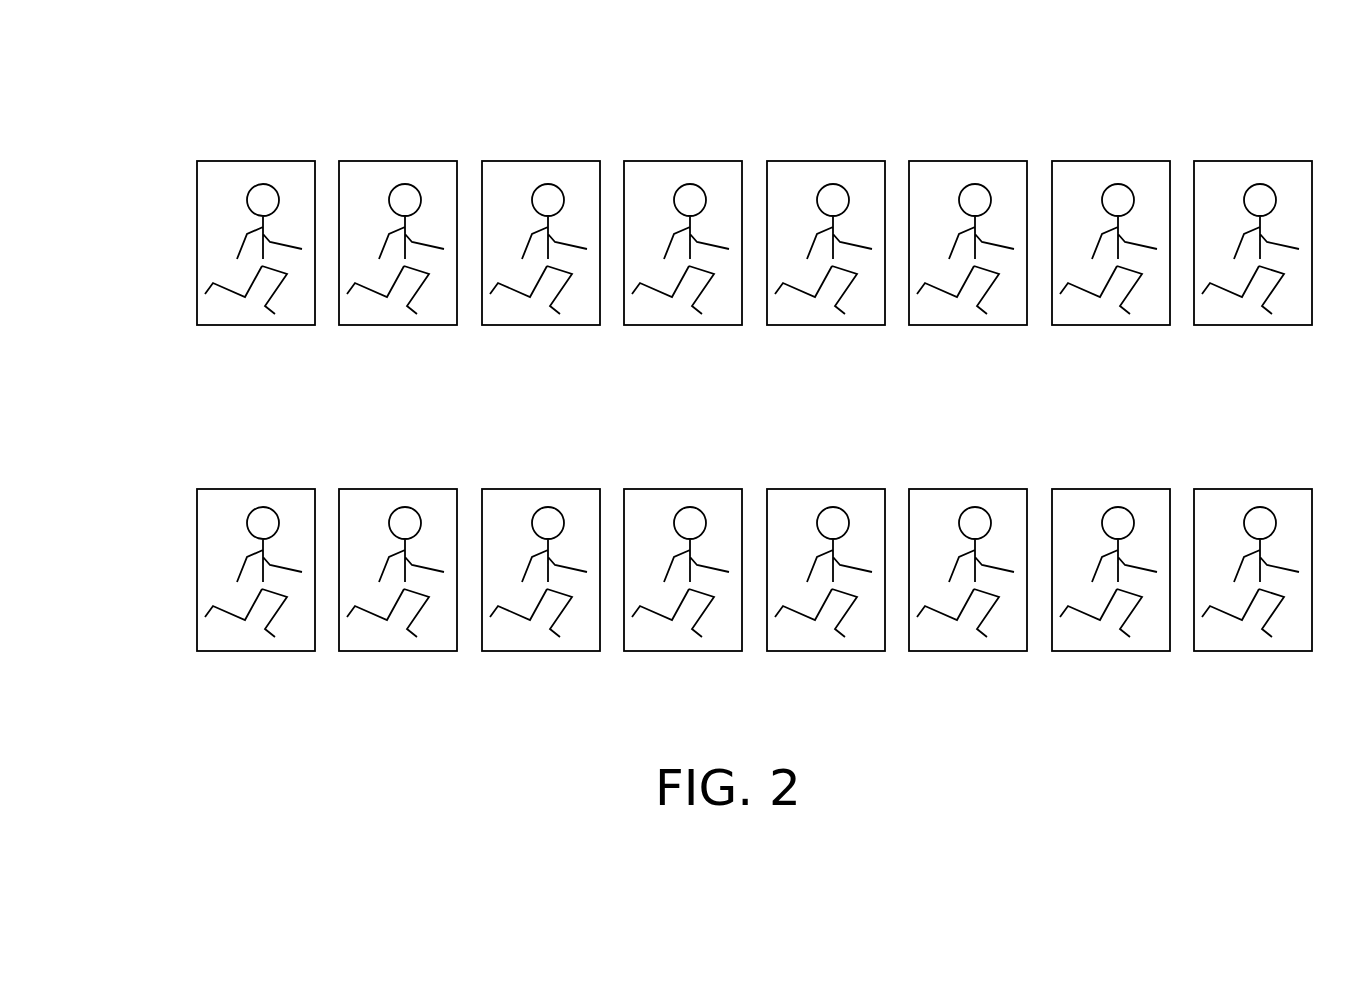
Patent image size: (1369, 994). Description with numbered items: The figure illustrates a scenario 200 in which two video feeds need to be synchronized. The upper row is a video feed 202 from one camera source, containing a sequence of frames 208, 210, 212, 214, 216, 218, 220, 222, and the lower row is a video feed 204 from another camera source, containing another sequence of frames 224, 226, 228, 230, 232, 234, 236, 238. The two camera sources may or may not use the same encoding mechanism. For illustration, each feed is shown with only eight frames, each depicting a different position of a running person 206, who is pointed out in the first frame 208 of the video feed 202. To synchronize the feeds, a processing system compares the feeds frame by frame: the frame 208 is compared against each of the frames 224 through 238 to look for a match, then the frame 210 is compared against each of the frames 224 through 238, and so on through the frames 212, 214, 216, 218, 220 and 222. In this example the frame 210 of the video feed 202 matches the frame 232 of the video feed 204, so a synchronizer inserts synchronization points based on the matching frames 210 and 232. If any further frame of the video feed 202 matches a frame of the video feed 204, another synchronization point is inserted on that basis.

The scenario 200 is at (1290, 80).
The video feed 202 is at (182, 130).
The video feed 204 is at (181, 462).
The person 206 is at (264, 168).
The frame 208 is at (256, 246).
The frame 210 is at (394, 325).
The frame 212 is at (537, 325).
The frame 214 is at (679, 325).
The frame 216 is at (822, 325).
The frame 218 is at (964, 325).
The frame 220 is at (1107, 325).
The frame 222 is at (1249, 325).
The frame 224 is at (252, 651).
The frame 226 is at (394, 651).
The frame 228 is at (537, 651).
The frame 230 is at (679, 651).
The frame 232 is at (822, 651).
The frame 234 is at (964, 651).
The frame 236 is at (1107, 651).
The frame 238 is at (1249, 651).